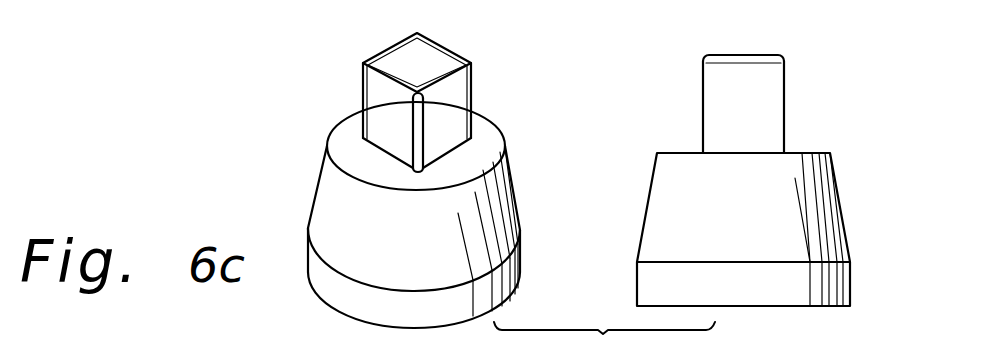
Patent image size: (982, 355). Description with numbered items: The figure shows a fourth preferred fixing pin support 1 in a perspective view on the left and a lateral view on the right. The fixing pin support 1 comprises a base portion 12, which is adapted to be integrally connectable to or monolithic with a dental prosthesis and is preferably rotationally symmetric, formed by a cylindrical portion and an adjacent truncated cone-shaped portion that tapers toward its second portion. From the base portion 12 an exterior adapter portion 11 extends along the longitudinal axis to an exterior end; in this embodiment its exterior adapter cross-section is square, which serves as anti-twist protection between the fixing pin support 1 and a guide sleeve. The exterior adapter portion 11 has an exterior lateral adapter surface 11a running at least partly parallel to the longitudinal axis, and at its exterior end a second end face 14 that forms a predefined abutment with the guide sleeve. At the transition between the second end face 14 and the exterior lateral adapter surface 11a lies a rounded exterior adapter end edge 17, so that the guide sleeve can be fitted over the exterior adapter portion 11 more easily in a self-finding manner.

The fixing pin support 1 is at (222, 125).
The exterior adapter portion 11 is at (331, 92).
The base portion 12 is at (289, 187).
The second end face 14 is at (421, 58).
The exterior adapter end edge 17 is at (461, 70).
The exterior lateral adapter surface 11a is at (450, 110).